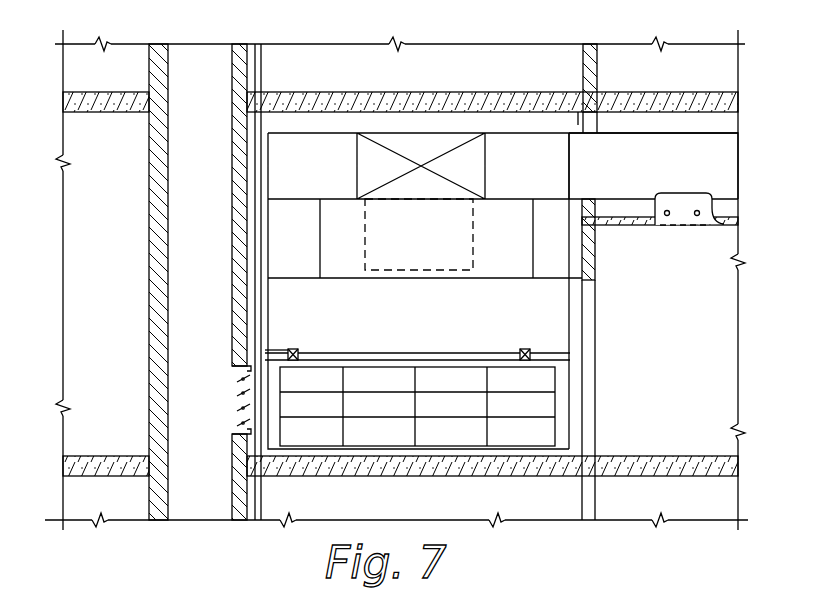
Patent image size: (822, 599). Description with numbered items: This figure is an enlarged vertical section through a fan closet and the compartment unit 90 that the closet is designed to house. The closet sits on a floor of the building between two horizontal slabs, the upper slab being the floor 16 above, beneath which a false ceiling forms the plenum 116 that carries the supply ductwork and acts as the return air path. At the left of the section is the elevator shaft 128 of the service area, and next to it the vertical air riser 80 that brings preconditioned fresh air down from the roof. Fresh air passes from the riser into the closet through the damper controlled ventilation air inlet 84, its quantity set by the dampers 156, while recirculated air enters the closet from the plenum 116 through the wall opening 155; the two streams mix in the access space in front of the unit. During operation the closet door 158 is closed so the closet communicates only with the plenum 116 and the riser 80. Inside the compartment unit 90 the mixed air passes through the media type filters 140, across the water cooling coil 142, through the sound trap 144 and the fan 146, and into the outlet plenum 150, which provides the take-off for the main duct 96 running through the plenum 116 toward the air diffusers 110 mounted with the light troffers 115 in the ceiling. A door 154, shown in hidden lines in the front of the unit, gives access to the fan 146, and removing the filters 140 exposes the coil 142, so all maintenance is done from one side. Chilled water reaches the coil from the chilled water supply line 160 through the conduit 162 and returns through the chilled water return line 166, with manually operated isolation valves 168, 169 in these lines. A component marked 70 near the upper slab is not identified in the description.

The floor 16 is at (638, 93).
The ceiling slab 70 is at (443, 63).
The vertical air riser 80 is at (180, 282).
The damper controlled ventilation air inlet 84 is at (232, 372).
The compartment unit 90 is at (560, 267).
The main duct 96 is at (653, 166).
The air diffuser 110 is at (718, 226).
The light troffer 115 is at (697, 218).
The plenum 116 is at (610, 122).
The elevator shaft 128 is at (91, 280).
The media type filters 140 is at (542, 408).
The water cooling coil 142 is at (563, 379).
The sound trap 144 is at (560, 320).
The fan 146 is at (475, 270).
The outlet plenum 150 is at (503, 166).
The door 154 is at (517, 238).
The wall opening 155 is at (584, 123).
The dampers 156 is at (242, 408).
The closet door 158 is at (588, 297).
The chilled water supply line 160 is at (266, 57).
The conduit 162 is at (280, 352).
The chilled water return line 166 is at (525, 357).
The isolation valve 168 is at (530, 350).
The isolation valve 169 is at (296, 351).